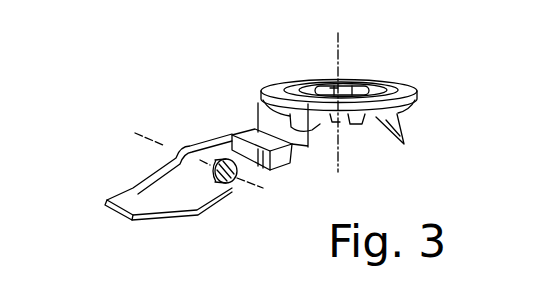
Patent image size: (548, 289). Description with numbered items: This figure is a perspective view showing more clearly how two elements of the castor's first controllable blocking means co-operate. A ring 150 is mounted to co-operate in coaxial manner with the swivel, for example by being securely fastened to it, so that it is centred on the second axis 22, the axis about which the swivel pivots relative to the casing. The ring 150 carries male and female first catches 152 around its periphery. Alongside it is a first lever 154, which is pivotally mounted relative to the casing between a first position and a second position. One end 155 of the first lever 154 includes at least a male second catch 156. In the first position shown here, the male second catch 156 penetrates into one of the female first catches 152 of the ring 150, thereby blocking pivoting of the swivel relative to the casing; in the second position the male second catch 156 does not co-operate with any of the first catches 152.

The second axis 22 is at (341, 62).
The ring 150 is at (404, 91).
The first catches 152 is at (406, 145).
The first lever 154 is at (134, 190).
The end of the first lever 155 is at (250, 131).
The male second catch 156 is at (258, 102).